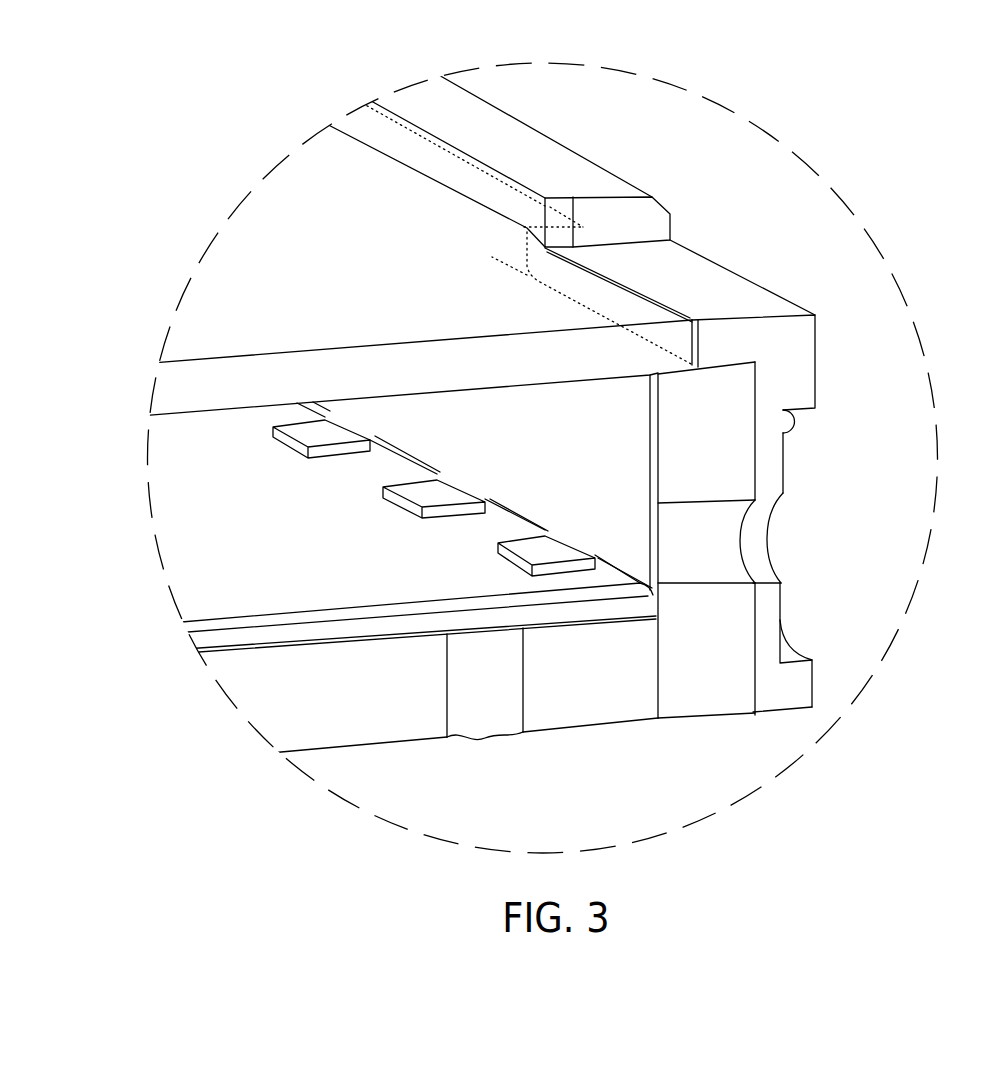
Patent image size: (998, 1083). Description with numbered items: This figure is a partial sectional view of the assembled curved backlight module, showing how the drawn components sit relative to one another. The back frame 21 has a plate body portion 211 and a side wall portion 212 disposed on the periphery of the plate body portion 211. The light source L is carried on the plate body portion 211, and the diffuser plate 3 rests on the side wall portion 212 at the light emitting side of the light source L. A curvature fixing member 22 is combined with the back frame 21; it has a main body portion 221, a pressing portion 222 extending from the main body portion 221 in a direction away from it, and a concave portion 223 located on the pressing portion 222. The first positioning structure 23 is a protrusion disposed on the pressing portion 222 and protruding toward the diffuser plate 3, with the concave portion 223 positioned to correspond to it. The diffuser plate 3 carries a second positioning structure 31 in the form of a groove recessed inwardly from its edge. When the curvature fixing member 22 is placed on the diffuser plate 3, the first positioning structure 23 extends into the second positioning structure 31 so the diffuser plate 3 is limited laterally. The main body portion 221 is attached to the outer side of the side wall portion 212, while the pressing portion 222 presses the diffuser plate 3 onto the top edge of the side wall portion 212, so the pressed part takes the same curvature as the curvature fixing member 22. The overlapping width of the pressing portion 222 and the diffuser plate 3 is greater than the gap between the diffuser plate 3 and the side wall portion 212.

The diffuser plate 3 is at (240, 235).
The back frame 21 is at (614, 730).
The plate body portion 211 is at (378, 718).
The side wall portion 212 is at (707, 692).
The curvature fixing member 22 is at (505, 108).
The main body portion 221 is at (802, 690).
The pressing portion 222 is at (563, 160).
The concave portion 223 is at (727, 298).
The first positioning structure 23 is at (713, 348).
The second positioning structure 31 is at (635, 298).
The light source L is at (206, 574).